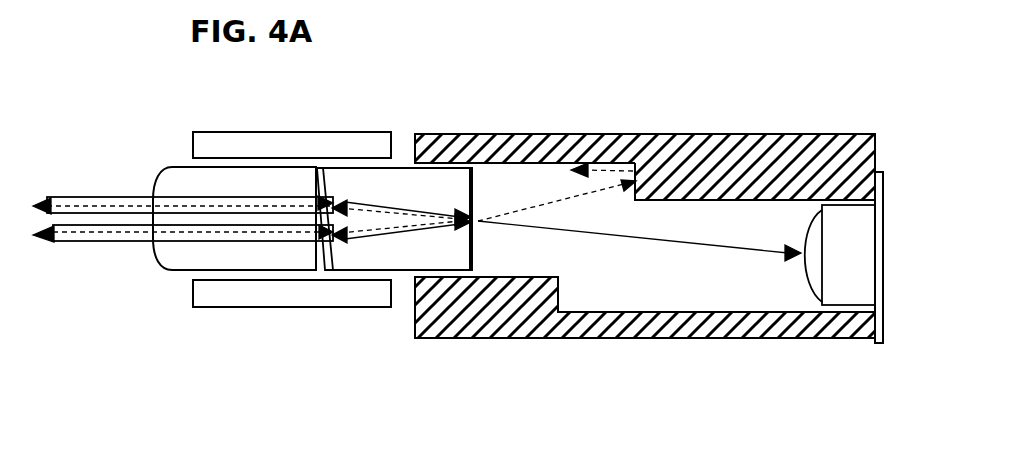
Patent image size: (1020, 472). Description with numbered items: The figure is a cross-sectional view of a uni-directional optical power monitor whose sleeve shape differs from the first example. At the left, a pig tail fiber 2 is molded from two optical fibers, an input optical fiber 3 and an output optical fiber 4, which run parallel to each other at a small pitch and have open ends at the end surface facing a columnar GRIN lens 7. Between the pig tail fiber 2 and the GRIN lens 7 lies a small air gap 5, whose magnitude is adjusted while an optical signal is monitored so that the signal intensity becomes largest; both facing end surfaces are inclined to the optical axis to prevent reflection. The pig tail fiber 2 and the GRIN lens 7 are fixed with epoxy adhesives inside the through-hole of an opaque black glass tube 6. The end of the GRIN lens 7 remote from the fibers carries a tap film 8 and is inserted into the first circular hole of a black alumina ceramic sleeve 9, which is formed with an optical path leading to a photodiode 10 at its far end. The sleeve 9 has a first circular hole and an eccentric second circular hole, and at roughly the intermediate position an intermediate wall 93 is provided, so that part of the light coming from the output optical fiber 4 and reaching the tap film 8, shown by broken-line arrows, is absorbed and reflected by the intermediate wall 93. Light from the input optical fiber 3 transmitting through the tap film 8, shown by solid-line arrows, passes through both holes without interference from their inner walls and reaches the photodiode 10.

The pig tail fiber 2 is at (250, 260).
The input optical fiber 3 is at (132, 197).
The output optical fiber 4 is at (113, 236).
The air gap 5 is at (317, 168).
The tube 6 is at (302, 300).
The columnar GRIN lens 7 is at (368, 253).
The tap film 8 is at (475, 193).
The intermediate wall 93 is at (645, 178).
The sleeve 9 is at (588, 323).
The photodiode 10 is at (833, 293).